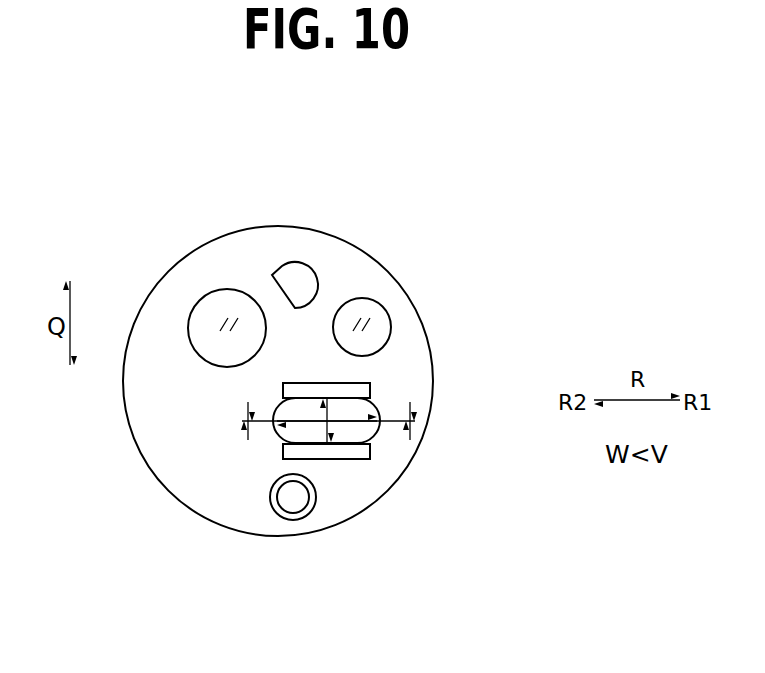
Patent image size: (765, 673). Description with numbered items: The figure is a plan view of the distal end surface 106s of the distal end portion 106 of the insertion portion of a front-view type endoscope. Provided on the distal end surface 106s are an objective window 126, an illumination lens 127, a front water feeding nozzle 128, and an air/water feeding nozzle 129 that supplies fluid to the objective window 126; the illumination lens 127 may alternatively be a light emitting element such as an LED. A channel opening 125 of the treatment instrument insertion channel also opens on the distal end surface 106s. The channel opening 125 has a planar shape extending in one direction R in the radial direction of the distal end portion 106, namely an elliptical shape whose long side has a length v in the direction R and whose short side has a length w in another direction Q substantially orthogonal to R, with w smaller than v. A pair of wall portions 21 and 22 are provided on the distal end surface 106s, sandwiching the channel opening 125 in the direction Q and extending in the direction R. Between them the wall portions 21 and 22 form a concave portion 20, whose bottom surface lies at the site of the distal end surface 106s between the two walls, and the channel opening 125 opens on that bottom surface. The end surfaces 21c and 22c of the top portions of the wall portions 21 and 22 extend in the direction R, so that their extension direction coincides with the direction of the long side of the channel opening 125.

The distal end portion 106 is at (269, 412).
The distal end surface 106s is at (192, 484).
The concave portion 20 is at (378, 366).
The wall portion 21 is at (364, 528).
The end surface 21c is at (334, 452).
The wall portion 22 is at (408, 336).
The end surface 22c is at (334, 384).
The channel opening 125 is at (350, 434).
The objective window 126 is at (215, 310).
The illumination lens 127 is at (352, 310).
The front water feeding nozzle 128 is at (293, 507).
The air/water feeding nozzle 129 is at (293, 278).